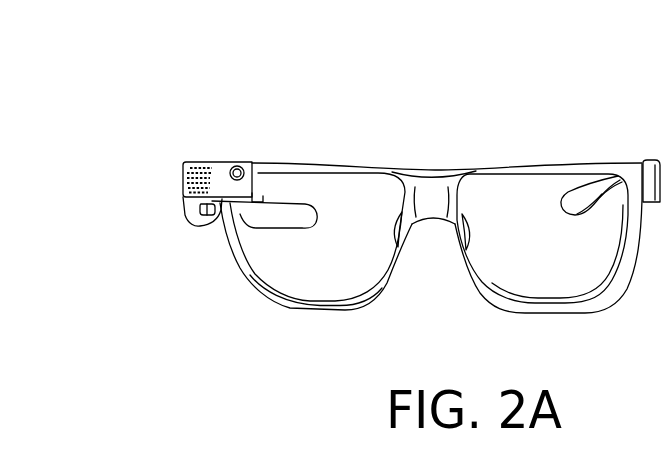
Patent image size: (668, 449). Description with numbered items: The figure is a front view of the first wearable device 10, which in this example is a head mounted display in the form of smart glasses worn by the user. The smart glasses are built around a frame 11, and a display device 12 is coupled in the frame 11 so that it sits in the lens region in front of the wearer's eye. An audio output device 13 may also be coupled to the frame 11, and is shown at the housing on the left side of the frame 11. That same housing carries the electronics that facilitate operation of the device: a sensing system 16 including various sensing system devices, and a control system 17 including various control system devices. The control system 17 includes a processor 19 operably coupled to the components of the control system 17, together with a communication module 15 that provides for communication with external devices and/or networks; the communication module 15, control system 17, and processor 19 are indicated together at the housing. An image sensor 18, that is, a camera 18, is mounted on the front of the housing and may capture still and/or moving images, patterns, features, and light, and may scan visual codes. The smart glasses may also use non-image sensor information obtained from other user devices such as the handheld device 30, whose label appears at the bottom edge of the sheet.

The first wearable device 10 is at (128, 122).
The frame 11 is at (431, 187).
The display device 12 is at (303, 272).
The audio output device 13 is at (197, 221).
The communication module 15 is at (242, 116).
The sensing system 16 is at (187, 193).
The control system 17 is at (242, 116).
The image sensor 18 is at (241, 166).
The processor 19 is at (203, 167).
The handheld device 30 is at (172, 444).